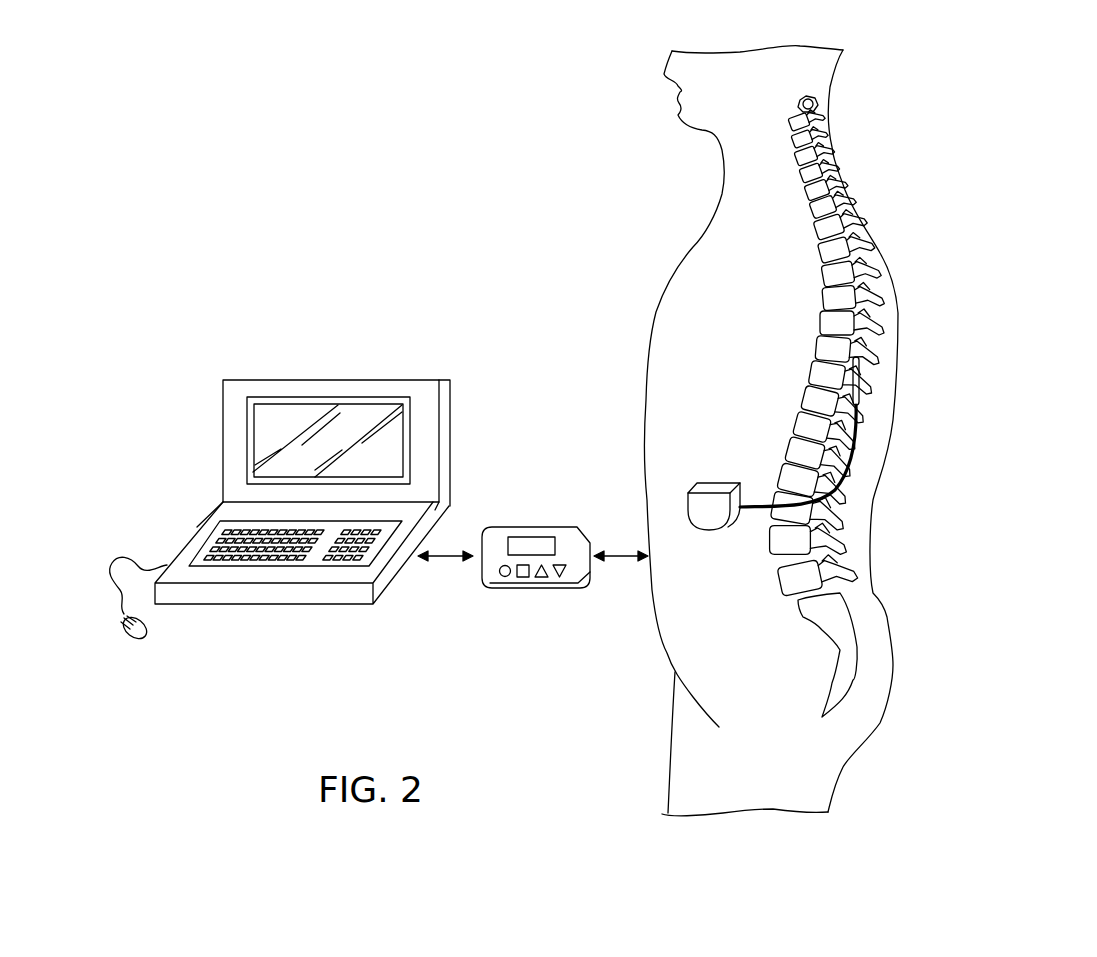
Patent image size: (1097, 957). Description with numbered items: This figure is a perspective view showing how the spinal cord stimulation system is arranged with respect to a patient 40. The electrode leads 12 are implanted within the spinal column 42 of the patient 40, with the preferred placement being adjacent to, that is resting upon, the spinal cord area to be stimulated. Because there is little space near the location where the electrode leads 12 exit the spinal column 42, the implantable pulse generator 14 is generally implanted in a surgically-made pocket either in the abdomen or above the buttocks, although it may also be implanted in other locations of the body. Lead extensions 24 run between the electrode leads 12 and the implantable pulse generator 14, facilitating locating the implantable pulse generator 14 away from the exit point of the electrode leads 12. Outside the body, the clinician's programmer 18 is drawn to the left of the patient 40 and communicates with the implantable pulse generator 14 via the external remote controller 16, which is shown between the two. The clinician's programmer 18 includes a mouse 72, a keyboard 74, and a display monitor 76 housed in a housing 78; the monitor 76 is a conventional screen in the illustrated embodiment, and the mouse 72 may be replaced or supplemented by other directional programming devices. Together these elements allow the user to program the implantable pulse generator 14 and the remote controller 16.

The implantable neurostimulation lead 12 is at (868, 383).
The implantable pulse generator 14 is at (714, 515).
The external remote controller 16 is at (554, 492).
The clinician's programmer 18 is at (289, 490).
The lead extension 24 is at (860, 463).
The patient 40 is at (660, 300).
The spinal column 42 is at (822, 362).
The mouse 72 is at (130, 637).
The keyboard 74 is at (262, 562).
The display monitor 76 is at (410, 440).
The housing 78 is at (197, 527).